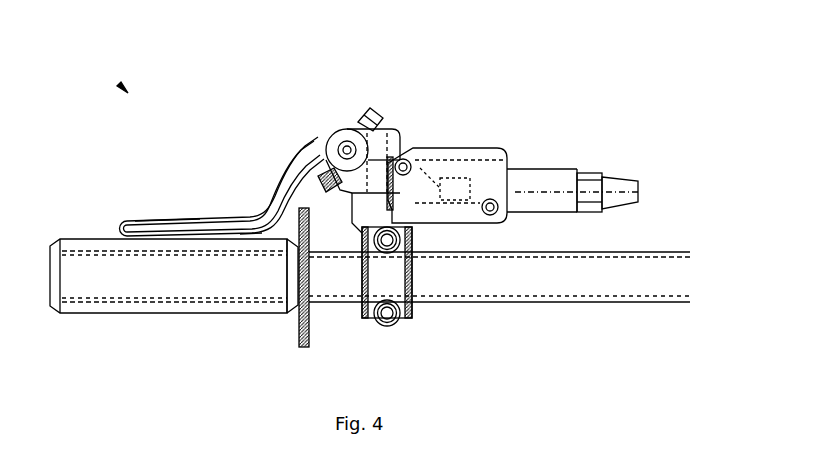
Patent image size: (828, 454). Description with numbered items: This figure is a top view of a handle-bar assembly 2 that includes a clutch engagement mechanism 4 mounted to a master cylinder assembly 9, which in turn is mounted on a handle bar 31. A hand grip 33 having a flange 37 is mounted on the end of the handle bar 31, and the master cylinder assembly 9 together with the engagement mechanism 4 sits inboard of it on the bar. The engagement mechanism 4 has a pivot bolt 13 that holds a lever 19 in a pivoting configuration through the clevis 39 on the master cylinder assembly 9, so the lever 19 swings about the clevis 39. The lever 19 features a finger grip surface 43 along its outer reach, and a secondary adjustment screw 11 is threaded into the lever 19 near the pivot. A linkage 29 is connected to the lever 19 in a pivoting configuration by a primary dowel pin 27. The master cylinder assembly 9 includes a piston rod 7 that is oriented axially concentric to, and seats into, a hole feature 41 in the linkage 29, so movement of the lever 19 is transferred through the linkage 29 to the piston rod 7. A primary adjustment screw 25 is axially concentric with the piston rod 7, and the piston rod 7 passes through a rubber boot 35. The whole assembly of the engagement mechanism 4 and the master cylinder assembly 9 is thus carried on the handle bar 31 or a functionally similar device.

The handle-bar assembly 2 is at (120, 85).
The engagement mechanism 4 is at (323, 131).
The piston rod 7 is at (413, 237).
The master cylinder assembly 9 is at (470, 148).
The secondary adjustment screw 11 is at (370, 110).
The pivot bolt 13 is at (336, 128).
The lever 19 is at (268, 188).
The primary adjustment screw 25 is at (265, 237).
The primary dowel pin 27 is at (287, 243).
The linkage 29 is at (349, 197).
The handle bar 31 is at (552, 302).
The hand grip 33 is at (93, 239).
The rubber boot 35 is at (393, 254).
The flange 37 is at (298, 340).
The clevis 39 is at (313, 147).
The hole feature 41 is at (375, 326).
The finger grip surface 43 is at (171, 219).